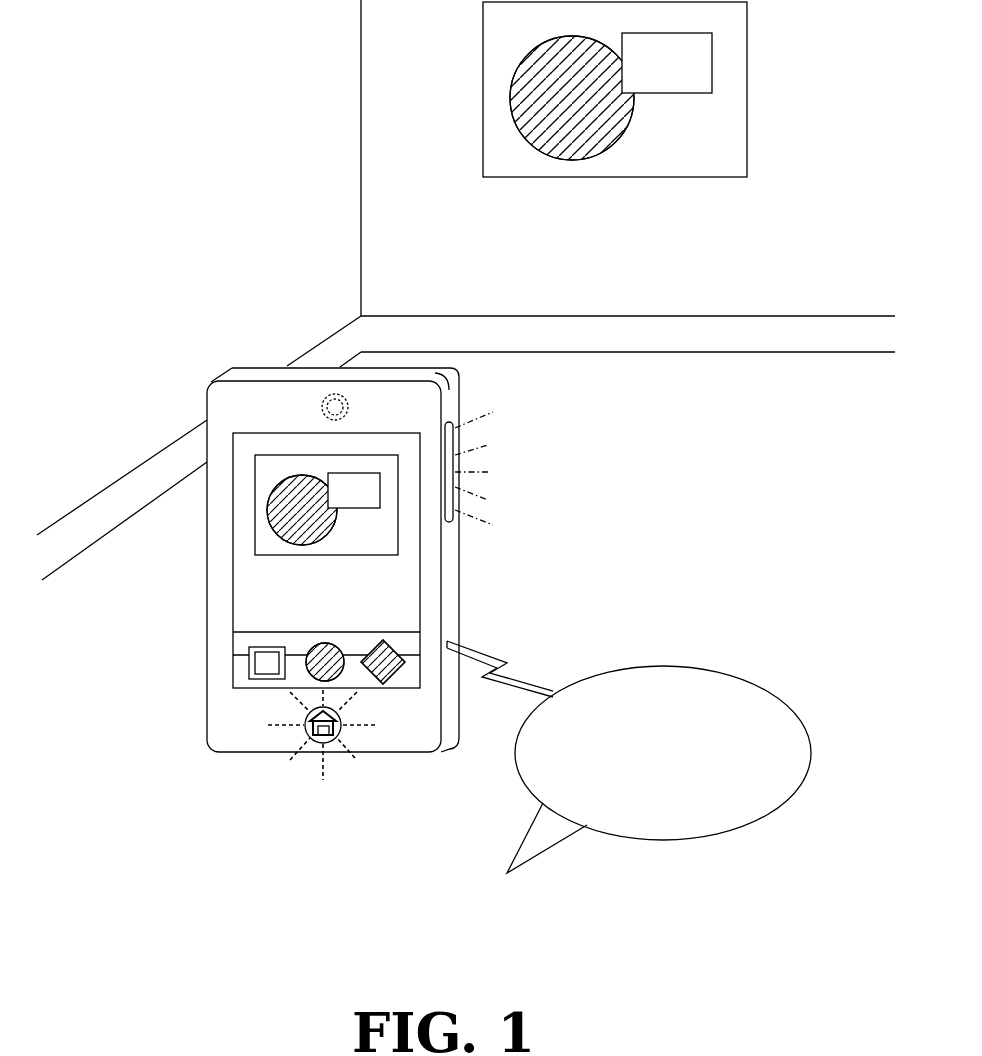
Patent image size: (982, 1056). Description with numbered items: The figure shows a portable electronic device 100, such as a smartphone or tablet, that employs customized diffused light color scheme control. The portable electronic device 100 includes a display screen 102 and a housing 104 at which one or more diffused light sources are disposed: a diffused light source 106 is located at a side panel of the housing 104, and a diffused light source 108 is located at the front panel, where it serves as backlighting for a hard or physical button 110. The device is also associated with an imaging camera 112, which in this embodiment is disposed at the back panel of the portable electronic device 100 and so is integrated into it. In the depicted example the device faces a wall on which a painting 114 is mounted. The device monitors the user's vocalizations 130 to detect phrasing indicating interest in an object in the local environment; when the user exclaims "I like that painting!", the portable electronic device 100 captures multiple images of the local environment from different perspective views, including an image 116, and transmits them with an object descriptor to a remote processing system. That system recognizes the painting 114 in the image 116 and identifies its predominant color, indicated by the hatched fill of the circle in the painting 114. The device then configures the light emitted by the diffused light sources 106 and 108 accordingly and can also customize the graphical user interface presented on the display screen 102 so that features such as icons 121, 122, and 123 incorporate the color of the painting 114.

The portable electronic device 100 is at (483, 569).
The display screen 102 is at (426, 617).
The housing 104 is at (457, 400).
The diffused light source 106 is at (457, 468).
The diffused light source 108 is at (305, 720).
The physical button 110 is at (340, 718).
The imaging camera 112 is at (320, 407).
The painting 114 is at (750, 48).
The image 116 is at (406, 594).
The icon 121 is at (263, 645).
The icon 122 is at (313, 645).
The icon 123 is at (367, 650).
The vocalization 130 is at (658, 667).